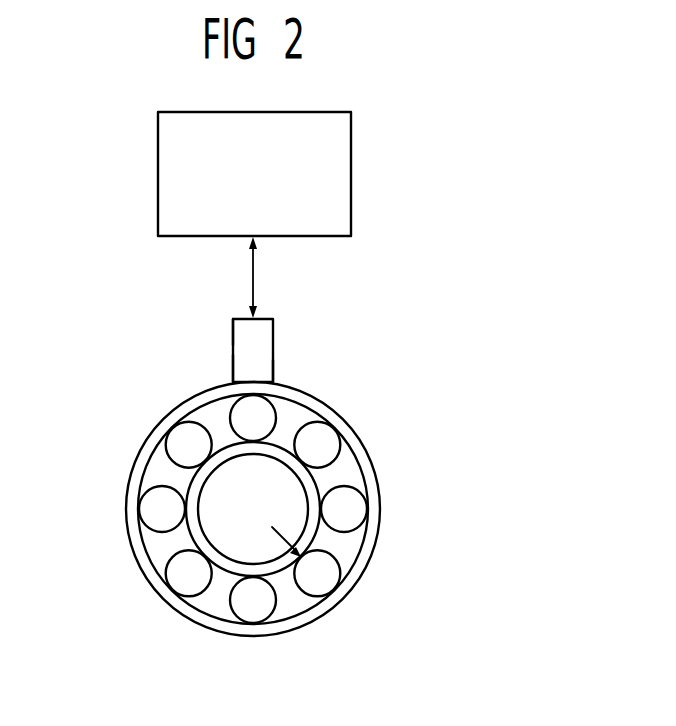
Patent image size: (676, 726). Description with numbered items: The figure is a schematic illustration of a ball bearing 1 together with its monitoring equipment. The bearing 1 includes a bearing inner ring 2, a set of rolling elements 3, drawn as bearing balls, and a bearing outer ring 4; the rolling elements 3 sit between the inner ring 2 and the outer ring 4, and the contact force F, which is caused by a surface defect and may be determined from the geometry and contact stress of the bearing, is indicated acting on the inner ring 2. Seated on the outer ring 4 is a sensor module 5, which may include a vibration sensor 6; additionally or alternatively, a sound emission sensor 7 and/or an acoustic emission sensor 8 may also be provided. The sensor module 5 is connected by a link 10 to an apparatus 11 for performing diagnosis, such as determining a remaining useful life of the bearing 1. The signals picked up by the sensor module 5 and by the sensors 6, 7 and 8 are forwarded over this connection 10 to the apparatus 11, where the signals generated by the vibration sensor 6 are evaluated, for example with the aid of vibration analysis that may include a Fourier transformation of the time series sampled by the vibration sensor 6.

The bearing 1 is at (254, 479).
The bearing inner ring 2 is at (310, 482).
The rolling elements 3 is at (358, 505).
The bearing outer ring 4 is at (358, 573).
The sensor module 5 is at (273, 333).
The vibration sensor 6 is at (273, 370).
The sound emission sensor 7 is at (233, 370).
The acoustic emission sensor 8 is at (233, 333).
The data connection 10 is at (253, 272).
The apparatus 11 is at (158, 170).
The contact force F is at (272, 527).